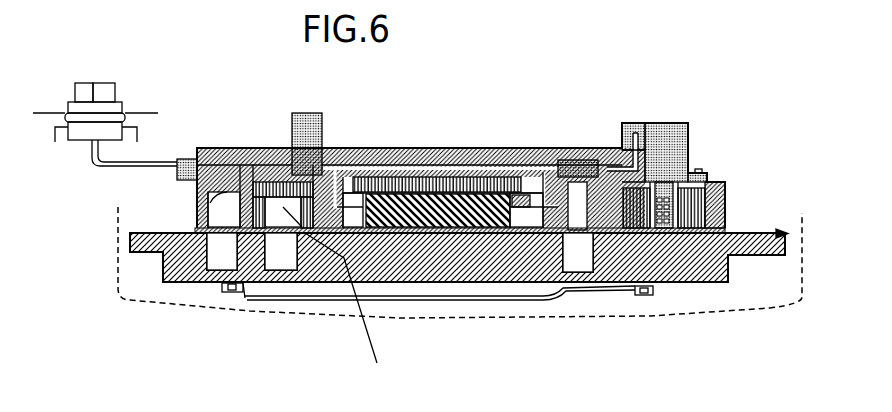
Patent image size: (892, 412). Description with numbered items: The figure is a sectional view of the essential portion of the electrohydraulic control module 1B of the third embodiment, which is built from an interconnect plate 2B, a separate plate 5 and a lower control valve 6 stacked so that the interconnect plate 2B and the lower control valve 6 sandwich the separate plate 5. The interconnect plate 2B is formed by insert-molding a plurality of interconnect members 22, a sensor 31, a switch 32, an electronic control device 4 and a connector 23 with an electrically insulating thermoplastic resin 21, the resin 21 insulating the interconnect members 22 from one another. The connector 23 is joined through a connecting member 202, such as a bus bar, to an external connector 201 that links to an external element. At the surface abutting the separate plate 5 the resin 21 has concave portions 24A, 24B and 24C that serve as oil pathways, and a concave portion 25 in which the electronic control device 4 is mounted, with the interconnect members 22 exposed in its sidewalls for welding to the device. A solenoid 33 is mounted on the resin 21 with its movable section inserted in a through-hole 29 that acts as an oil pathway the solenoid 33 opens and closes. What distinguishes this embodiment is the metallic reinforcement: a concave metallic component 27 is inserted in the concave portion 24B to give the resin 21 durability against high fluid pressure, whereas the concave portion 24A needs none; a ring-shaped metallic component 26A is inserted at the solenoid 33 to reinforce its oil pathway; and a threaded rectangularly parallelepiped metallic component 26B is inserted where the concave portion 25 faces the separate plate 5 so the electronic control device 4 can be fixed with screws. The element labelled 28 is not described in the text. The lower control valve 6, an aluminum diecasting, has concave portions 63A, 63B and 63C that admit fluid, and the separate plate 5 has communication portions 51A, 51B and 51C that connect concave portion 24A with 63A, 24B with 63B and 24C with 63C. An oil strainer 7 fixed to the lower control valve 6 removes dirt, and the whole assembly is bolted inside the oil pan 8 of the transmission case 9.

The electrohydraulic control module 1B is at (606, 60).
The interconnect plate 2B is at (402, 144).
The electronic control device 4 is at (445, 148).
The separate plate 5 is at (723, 233).
The lower control valve 6 is at (786, 231).
The oil strainer 7 is at (596, 290).
The oil pan 8 is at (802, 267).
The transmission case 9 is at (48, 112).
The resin 21 is at (247, 147).
The interconnect members 22 is at (218, 147).
The connector 23 is at (191, 158).
The concave portion 24A is at (198, 201).
The concave portion 24B is at (343, 299).
The concave portion 24C is at (612, 148).
The concave portion 25 is at (361, 150).
The ring-shaped metallic component 26A is at (711, 181).
The rectangularly parallelepiped metallic component 26B is at (460, 148).
The concave metallic component 27 is at (278, 165).
The cover portion 28 is at (521, 148).
The through-hole 29 is at (665, 225).
The sensor 31 is at (313, 113).
The switch 32 is at (576, 147).
The solenoid 33 is at (688, 138).
The communication portion 51A is at (230, 235).
The communication portion 51B is at (277, 234).
The communication portion 51C is at (576, 234).
The concave portion 63A is at (178, 283).
The concave portion 63B is at (237, 295).
The concave portion 63C is at (563, 285).
The external connector 201 is at (122, 103).
The connecting member 202 is at (110, 172).